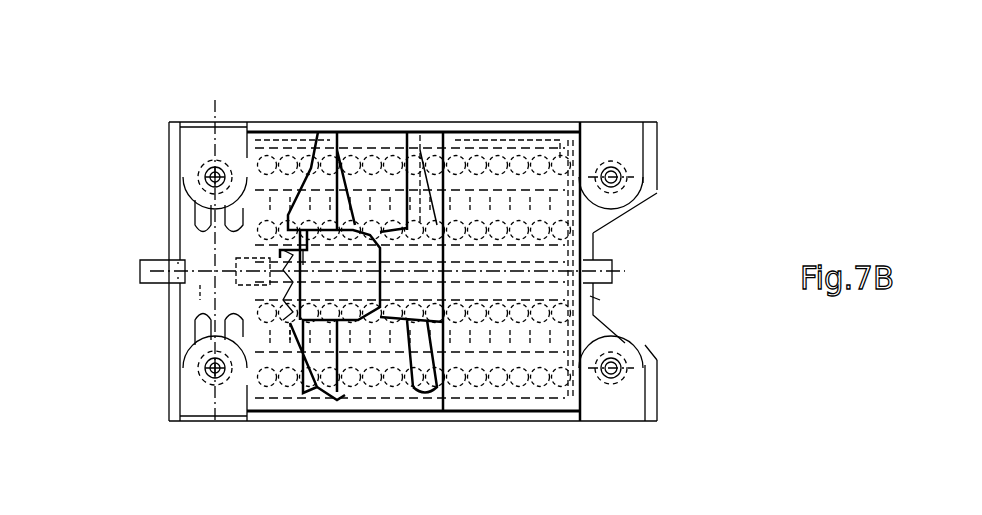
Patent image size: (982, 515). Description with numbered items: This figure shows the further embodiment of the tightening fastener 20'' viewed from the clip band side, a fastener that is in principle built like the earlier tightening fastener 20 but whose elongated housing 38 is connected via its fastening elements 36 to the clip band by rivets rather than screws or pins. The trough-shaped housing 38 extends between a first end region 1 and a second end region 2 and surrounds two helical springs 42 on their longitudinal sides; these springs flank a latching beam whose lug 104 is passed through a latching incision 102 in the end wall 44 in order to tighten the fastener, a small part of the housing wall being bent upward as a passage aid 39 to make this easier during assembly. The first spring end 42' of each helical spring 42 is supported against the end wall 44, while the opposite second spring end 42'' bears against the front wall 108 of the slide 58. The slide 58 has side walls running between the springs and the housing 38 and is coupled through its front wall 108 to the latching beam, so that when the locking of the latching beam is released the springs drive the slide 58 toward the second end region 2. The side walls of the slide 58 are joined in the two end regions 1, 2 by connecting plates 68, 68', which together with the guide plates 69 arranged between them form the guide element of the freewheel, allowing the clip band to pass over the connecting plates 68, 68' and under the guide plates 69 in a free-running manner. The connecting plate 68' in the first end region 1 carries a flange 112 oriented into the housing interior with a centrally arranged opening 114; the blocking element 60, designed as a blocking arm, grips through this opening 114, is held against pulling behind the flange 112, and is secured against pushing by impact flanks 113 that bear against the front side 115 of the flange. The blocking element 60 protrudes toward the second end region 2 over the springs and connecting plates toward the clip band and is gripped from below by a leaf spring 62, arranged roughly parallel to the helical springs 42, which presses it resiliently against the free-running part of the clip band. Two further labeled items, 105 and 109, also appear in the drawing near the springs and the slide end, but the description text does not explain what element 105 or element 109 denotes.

The first end section 1 is at (215, 80).
The second end section 2 is at (595, 94).
The tightening fastener 20 is at (752, 6).
The tightening fastener 20'' is at (482, 271).
The fastening elements 36 is at (198, 140).
The elongated housing 38 is at (447, 425).
The passage aid 39 is at (168, 310).
The helical spring 42 is at (413, 243).
The first spring end 42' is at (167, 285).
The second spring end 42'' is at (543, 272).
The end wall 44 is at (168, 383).
The slide 58 is at (582, 232).
The blocking element 60 is at (420, 130).
The leaf spring 62 is at (446, 130).
The connecting plate 68 is at (507, 110).
The connecting plate 68' is at (291, 100).
The guide plates 69 is at (341, 130).
The latching incision 102 is at (170, 302).
The lug 104 is at (143, 258).
The spring guide 105 is at (423, 130).
The front wall 108 is at (598, 313).
The shaft journal 109 is at (575, 305).
The flange 112 is at (280, 412).
The impact flanks 113 is at (306, 120).
The opening 114 is at (292, 112).
The front side 115 is at (323, 84).